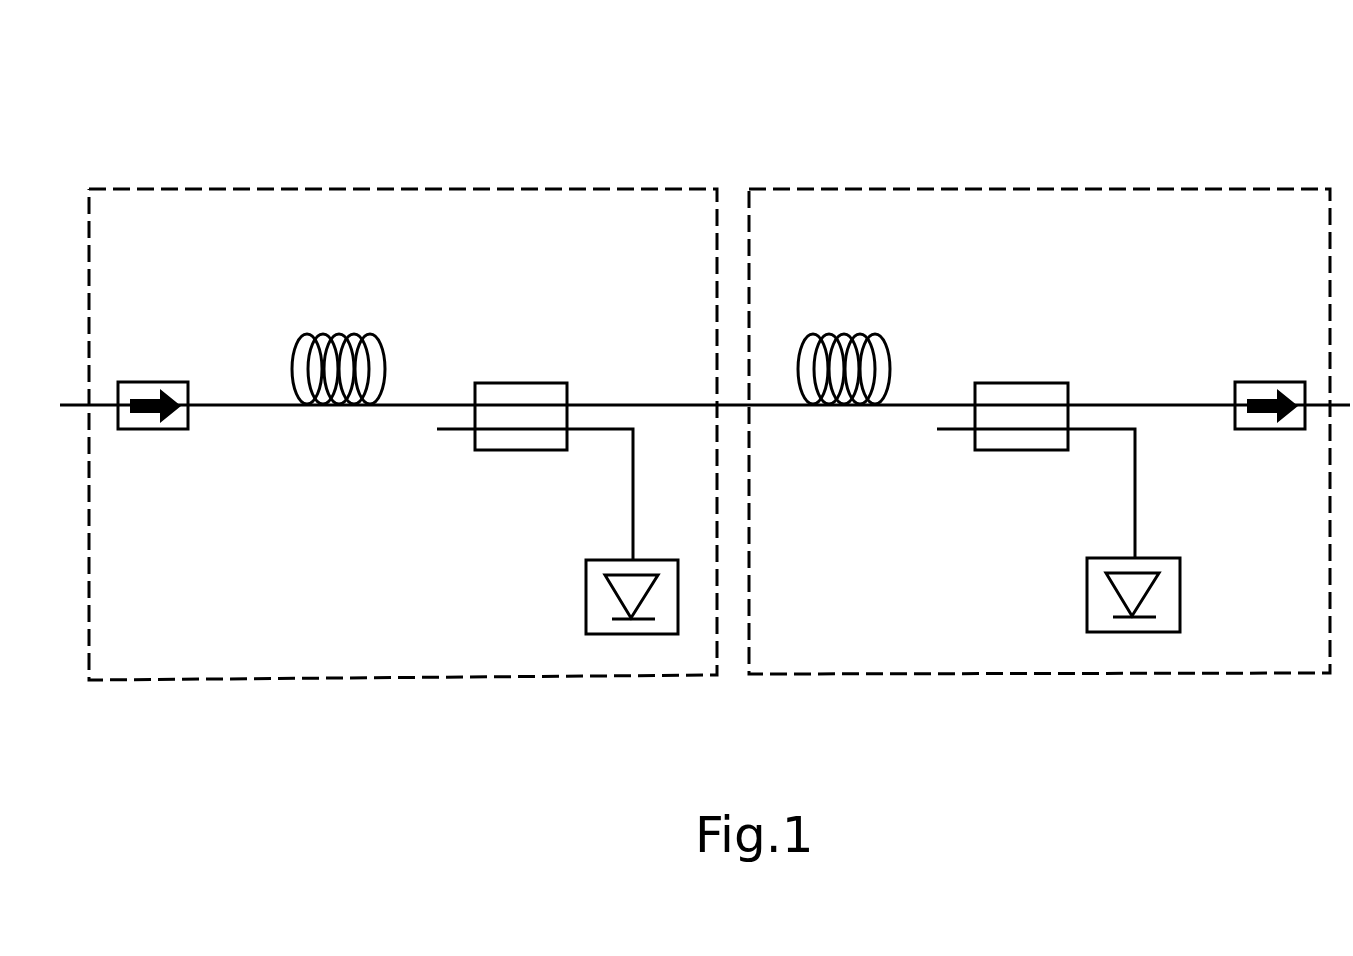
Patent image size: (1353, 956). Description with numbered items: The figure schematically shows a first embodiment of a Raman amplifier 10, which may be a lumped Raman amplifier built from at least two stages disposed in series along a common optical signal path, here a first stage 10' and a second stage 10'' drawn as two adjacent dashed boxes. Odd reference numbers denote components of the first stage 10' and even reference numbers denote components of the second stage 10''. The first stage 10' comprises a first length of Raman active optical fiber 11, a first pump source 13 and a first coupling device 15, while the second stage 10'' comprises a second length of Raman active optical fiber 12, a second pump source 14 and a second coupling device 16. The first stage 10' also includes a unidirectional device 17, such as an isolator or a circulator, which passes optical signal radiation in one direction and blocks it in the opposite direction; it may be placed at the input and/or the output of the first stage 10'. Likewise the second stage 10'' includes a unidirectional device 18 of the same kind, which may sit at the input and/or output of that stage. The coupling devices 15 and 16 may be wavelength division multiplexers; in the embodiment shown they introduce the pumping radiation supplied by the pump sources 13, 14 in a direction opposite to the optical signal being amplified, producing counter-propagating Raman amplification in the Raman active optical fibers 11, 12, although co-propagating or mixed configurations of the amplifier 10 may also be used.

The Raman amplifier 10 is at (705, 203).
The first stage 10' is at (403, 381).
The second stage 10'' is at (1039, 373).
The first length of Raman active optical fiber 11 is at (350, 333).
The second length of Raman active optical fiber 12 is at (863, 333).
The first pump source 13 is at (583, 593).
The second pump source 14 is at (1088, 595).
The first coupling device 15 is at (555, 382).
The second coupling device 16 is at (1058, 378).
The unidirectional device 17 is at (162, 383).
The unidirectional device 18 is at (1280, 382).